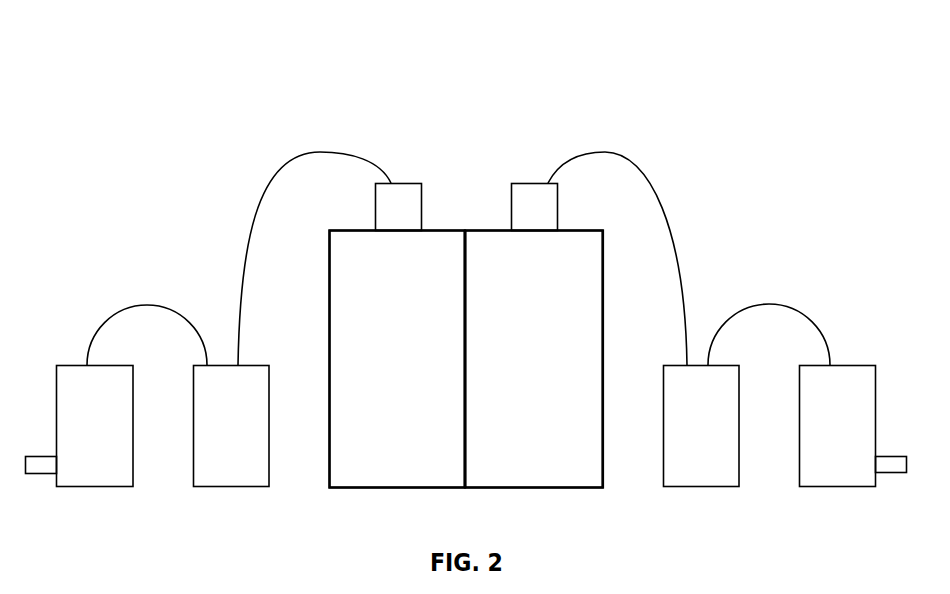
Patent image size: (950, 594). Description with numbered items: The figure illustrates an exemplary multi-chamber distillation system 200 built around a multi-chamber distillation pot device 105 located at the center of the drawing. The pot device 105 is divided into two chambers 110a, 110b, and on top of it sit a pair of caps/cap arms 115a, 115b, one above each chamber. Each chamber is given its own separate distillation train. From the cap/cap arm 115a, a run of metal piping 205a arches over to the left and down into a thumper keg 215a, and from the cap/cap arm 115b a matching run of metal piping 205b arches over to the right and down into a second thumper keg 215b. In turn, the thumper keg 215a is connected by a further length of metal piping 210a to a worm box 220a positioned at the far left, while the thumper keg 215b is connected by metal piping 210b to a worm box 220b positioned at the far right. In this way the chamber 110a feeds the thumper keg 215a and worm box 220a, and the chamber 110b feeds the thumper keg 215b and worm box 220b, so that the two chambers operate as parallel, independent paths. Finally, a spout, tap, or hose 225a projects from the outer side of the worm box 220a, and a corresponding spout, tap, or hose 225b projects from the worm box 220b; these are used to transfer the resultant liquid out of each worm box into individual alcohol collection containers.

The multi-chamber distillation system 200 is at (386, 88).
The multi-chamber distillation pot device 105 is at (483, 180).
The chamber 110a is at (398, 359).
The chamber 110b is at (534, 359).
The cap/cap arm 115a is at (399, 207).
The cap/cap arm 115b is at (535, 207).
The metal piping 205a is at (260, 186).
The metal piping 205b is at (659, 182).
The metal piping 210a is at (131, 299).
The metal piping 210b is at (805, 299).
The thumper keg 215a is at (216, 462).
The thumper keg 215b is at (728, 454).
The worm box 220a is at (89, 462).
The worm box 220b is at (842, 398).
The spout, tap, or hose 225a is at (38, 447).
The spout, tap, or hose 225b is at (891, 481).